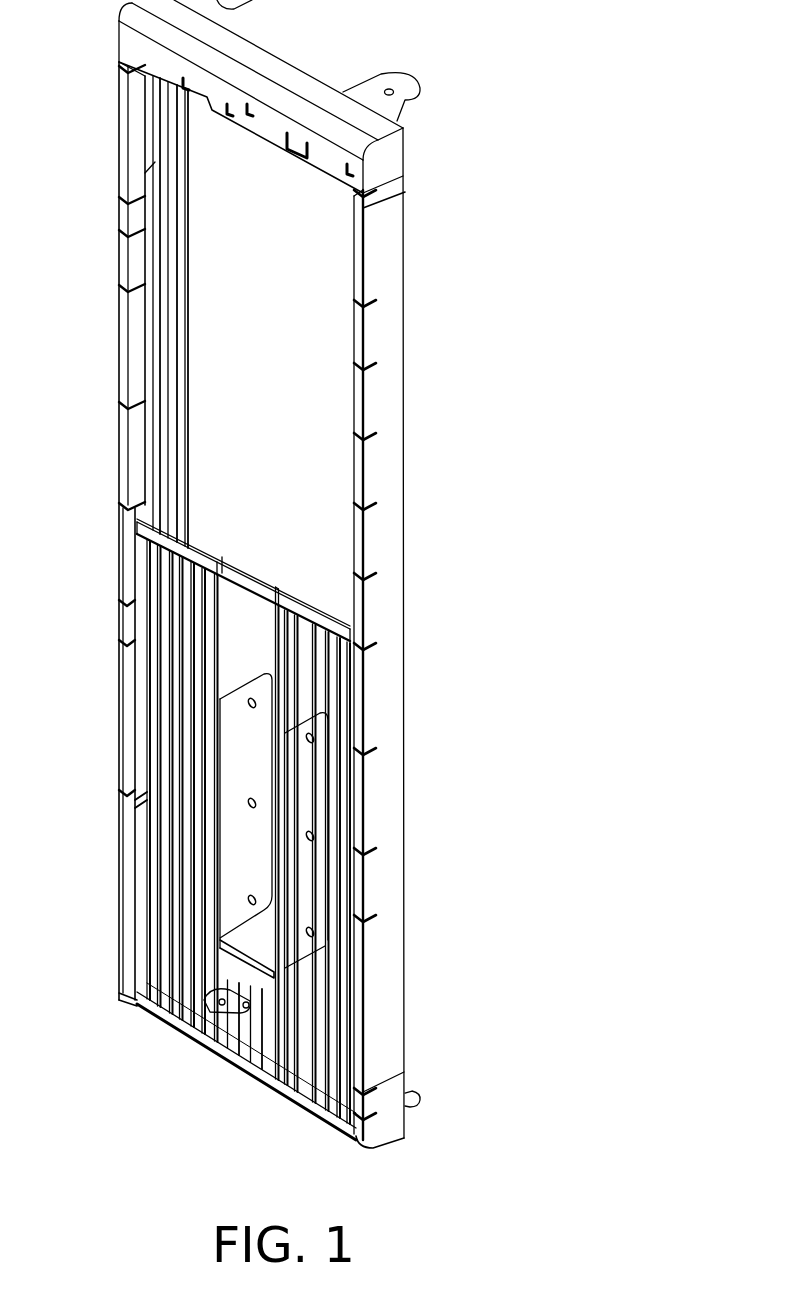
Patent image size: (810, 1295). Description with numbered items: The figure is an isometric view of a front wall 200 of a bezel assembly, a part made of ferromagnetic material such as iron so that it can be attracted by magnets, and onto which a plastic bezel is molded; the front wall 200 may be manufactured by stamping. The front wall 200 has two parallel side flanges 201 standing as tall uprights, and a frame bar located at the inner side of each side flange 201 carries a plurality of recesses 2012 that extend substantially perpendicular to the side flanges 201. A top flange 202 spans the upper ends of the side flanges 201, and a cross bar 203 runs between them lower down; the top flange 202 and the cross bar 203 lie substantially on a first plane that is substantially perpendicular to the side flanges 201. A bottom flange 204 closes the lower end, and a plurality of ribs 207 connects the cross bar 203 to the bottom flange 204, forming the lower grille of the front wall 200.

The front wall 200 is at (516, 61).
The side flange 201 is at (378, 391).
The recess 2012 is at (376, 302).
The top flange 202 is at (133, 49).
The cross bar 203 is at (298, 597).
The bottom flange 204 is at (165, 1010).
The rib 207 is at (308, 688).